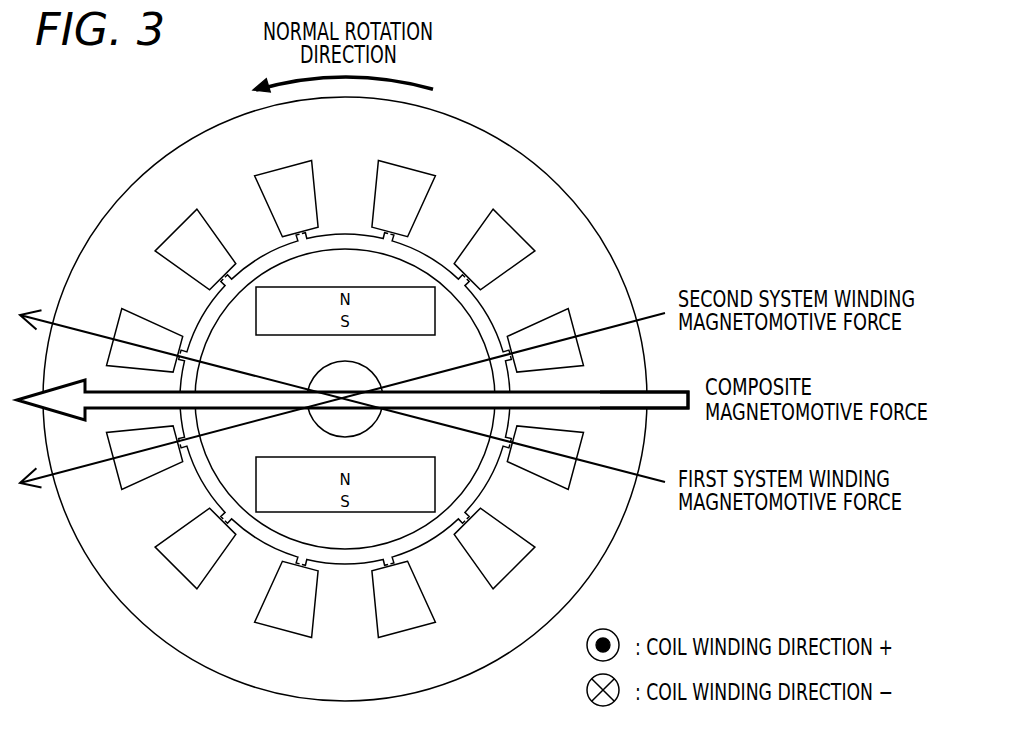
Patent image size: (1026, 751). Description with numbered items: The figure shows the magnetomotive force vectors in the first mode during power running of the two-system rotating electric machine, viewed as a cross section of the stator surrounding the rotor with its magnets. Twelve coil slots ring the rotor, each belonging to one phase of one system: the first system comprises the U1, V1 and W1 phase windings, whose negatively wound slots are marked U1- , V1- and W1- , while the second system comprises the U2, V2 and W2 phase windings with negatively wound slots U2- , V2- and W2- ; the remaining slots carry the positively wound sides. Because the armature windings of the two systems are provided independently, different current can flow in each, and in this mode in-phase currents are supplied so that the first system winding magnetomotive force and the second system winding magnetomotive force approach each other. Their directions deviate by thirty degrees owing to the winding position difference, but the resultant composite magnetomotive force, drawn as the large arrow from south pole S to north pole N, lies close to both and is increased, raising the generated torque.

The U1-phase armature winding coil (negative winding direction) U1- is at (287, 599).
The U2-phase armature winding coil (negative winding direction) U2- is at (404, 599).
The V1-phase armature winding coil (negative winding direction) V1- is at (545, 341).
The V2-phase armature winding coil (negative winding direction) V2- is at (494, 249).
The W1-phase armature winding coil (negative winding direction) W1- is at (195, 249).
The W2-phase armature winding coil (negative winding direction) W2- is at (145, 341).
The south pole of combined magnetomotive force S is at (352, 400).
The north pole of combined magnetomotive force N is at (644, 386).